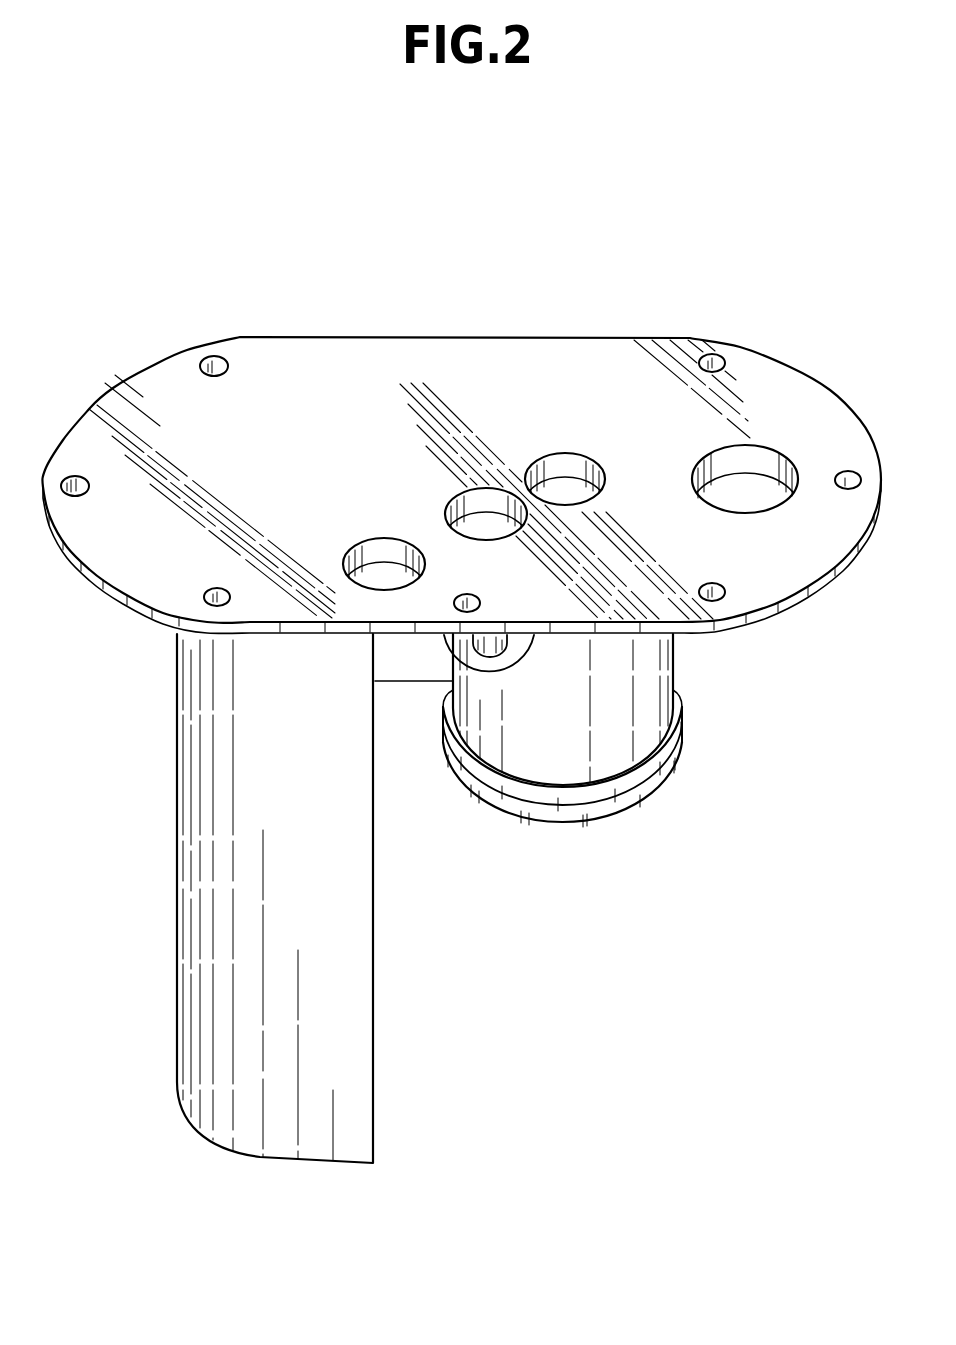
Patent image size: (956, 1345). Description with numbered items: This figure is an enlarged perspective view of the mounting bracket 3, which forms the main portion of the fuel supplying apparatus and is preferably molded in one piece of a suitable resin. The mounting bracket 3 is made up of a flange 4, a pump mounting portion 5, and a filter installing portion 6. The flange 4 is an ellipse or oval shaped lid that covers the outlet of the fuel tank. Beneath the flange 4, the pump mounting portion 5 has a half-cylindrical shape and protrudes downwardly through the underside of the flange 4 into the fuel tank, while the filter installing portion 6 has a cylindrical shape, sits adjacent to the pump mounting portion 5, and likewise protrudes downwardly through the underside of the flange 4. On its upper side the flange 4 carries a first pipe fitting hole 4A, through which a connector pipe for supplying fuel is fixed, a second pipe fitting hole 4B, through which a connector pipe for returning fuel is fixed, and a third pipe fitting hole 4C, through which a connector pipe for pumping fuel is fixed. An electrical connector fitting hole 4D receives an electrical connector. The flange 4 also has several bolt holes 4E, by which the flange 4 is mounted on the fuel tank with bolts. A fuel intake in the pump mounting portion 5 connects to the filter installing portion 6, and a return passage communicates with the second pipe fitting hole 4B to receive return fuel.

The mounting bracket 3 is at (484, 330).
The flange 4 is at (364, 350).
The first pipe fitting hole 4A is at (563, 468).
The second pipe fitting hole 4B is at (474, 500).
The third pipe fitting hole 4C is at (372, 558).
The electrical connector fitting hole 4D is at (755, 458).
The bolt holes 4E is at (210, 362).
The pump mounting portion 5 is at (190, 865).
The filter installing portion 6 is at (664, 688).